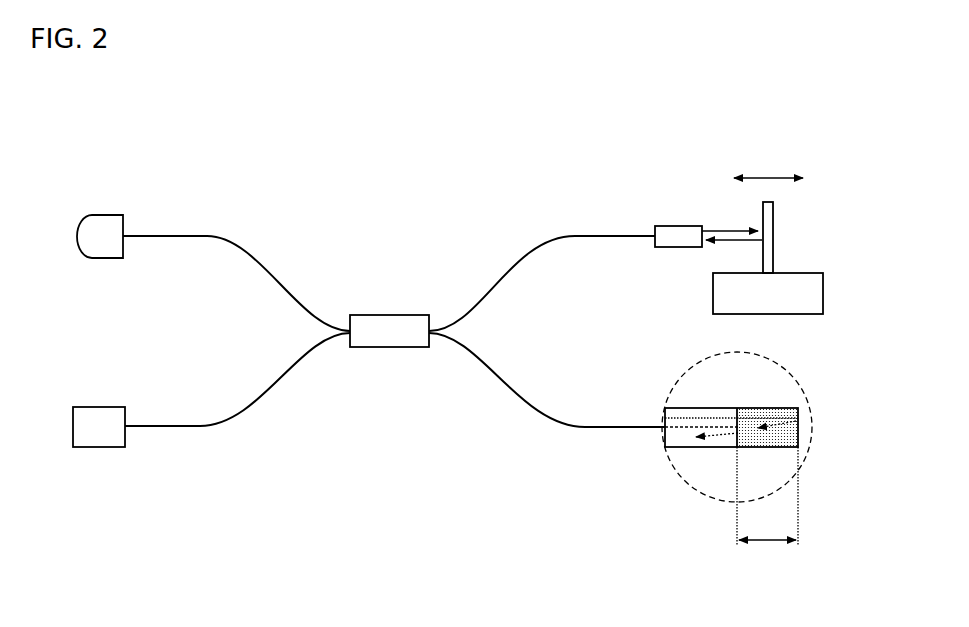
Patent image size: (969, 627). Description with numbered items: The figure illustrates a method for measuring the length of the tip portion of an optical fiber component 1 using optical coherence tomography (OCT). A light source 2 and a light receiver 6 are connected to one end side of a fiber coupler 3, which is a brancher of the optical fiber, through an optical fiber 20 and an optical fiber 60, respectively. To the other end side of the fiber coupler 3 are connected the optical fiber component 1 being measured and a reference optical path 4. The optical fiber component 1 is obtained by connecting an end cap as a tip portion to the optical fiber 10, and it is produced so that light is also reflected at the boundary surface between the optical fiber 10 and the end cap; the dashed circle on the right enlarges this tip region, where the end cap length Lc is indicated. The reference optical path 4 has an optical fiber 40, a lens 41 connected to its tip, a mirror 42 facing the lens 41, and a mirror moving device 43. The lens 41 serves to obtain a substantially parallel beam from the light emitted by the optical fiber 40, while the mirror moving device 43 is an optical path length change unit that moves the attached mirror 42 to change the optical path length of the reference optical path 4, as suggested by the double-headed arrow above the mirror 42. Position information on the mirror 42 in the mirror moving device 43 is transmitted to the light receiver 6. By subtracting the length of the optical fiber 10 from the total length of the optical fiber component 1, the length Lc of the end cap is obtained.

The optical fiber component 1 is at (620, 456).
The light source 2 is at (99, 448).
The fiber coupler 3 is at (388, 314).
The reference optical path 4 is at (542, 245).
The light receiver 6 is at (106, 213).
The optical fiber 10 is at (590, 431).
The optical fiber 20 is at (252, 408).
The optical fiber 40 is at (533, 256).
The lens 41 is at (678, 226).
The mirror 42 is at (773, 211).
The mirror moving device 43 is at (823, 291).
The optical fiber 60 is at (208, 233).